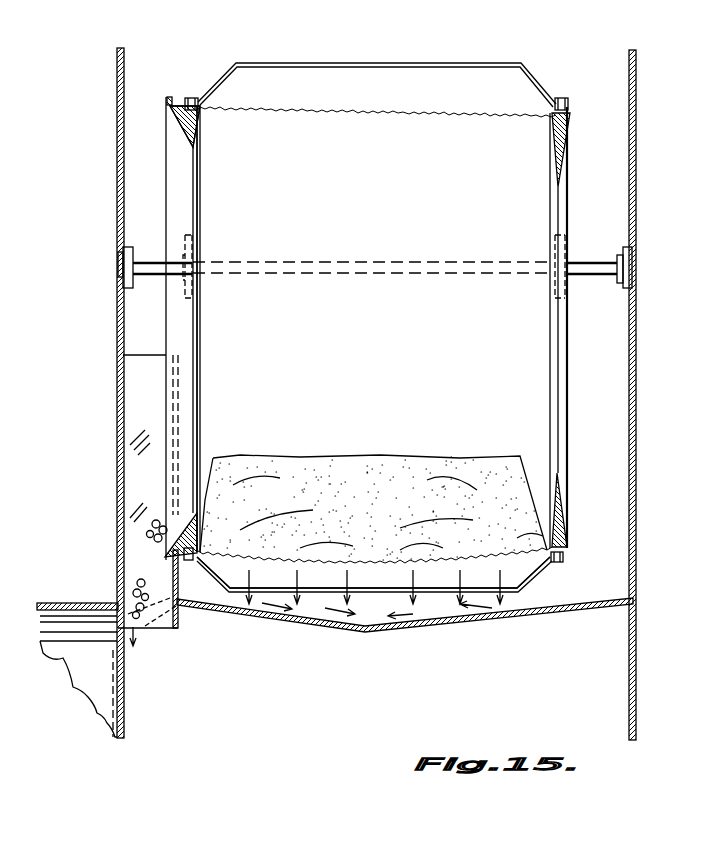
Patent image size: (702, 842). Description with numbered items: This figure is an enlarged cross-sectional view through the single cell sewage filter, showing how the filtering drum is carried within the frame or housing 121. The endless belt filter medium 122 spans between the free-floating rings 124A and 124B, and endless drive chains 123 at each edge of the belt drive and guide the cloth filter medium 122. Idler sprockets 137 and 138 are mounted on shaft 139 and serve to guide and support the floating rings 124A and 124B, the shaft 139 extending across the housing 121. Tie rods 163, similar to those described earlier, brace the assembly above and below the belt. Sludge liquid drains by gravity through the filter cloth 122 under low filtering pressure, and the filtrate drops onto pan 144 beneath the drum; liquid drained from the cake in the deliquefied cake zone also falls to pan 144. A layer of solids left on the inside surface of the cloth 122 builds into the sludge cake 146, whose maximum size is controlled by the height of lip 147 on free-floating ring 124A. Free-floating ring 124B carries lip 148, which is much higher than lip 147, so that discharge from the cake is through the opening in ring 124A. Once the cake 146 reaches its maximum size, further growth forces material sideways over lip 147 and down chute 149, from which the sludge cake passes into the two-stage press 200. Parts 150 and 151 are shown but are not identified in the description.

The frame or housing 121 is at (636, 135).
The endless belt filter medium 122 is at (365, 116).
The endless drive chains 123 is at (190, 561).
The free-floating ring 124A is at (166, 128).
The free-floating ring 124B is at (566, 158).
The idler sprocket 137 is at (186, 243).
The idler sprocket 138 is at (570, 250).
The shaft 139 is at (386, 262).
The pan 144 is at (292, 626).
The sludge cake 146 is at (350, 479).
The lip 147 is at (200, 355).
The lip 148 is at (560, 492).
The chute 149 is at (139, 417).
The upper left wedge 150 is at (184, 122).
The fastener 151 is at (568, 110).
The tie rods 163 is at (393, 66).
The two-stage press 200 is at (52, 604).